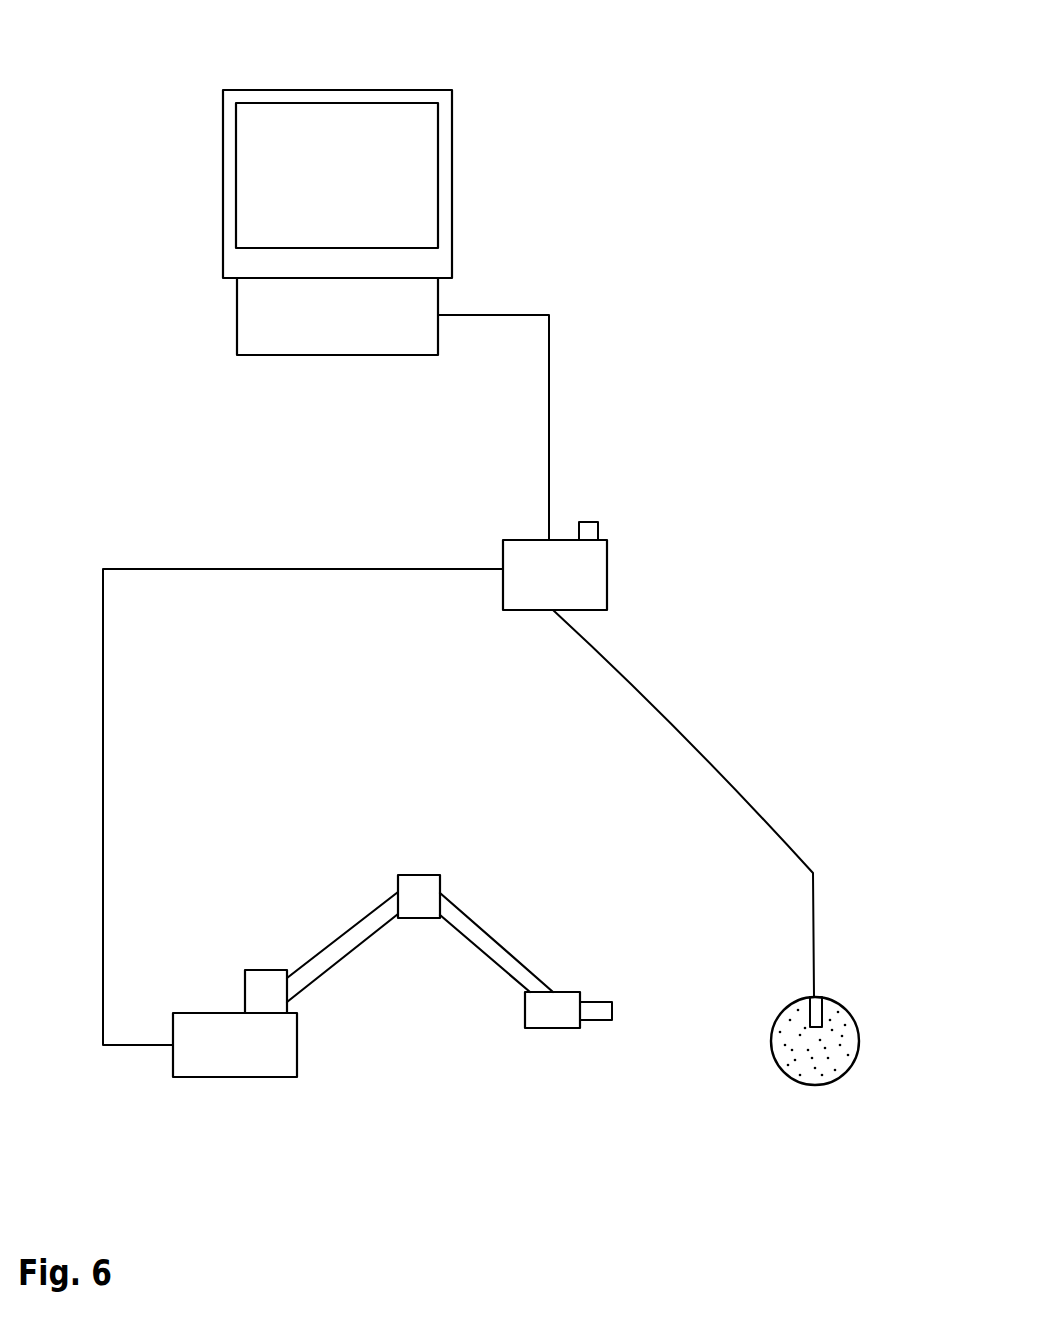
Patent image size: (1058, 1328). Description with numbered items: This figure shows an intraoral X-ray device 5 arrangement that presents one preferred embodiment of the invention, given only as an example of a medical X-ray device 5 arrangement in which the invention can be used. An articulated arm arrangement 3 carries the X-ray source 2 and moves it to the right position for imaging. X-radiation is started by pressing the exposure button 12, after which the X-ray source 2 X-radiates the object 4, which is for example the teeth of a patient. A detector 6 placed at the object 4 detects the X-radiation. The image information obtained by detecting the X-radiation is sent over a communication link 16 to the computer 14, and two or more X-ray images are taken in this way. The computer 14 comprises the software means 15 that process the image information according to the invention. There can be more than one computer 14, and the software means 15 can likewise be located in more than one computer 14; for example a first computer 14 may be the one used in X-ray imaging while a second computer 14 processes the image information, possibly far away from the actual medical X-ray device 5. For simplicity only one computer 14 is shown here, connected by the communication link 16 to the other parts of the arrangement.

The X-ray source 2 is at (562, 1022).
The articulated arm arrangement 3 is at (310, 860).
The object 4 is at (810, 1086).
The intraoral X-ray device 5 is at (842, 545).
The detector 6 is at (823, 1010).
The exposure button 12 is at (598, 530).
The computer 14 is at (255, 90).
The software means 15 is at (205, 375).
The communication link 16 is at (549, 357).